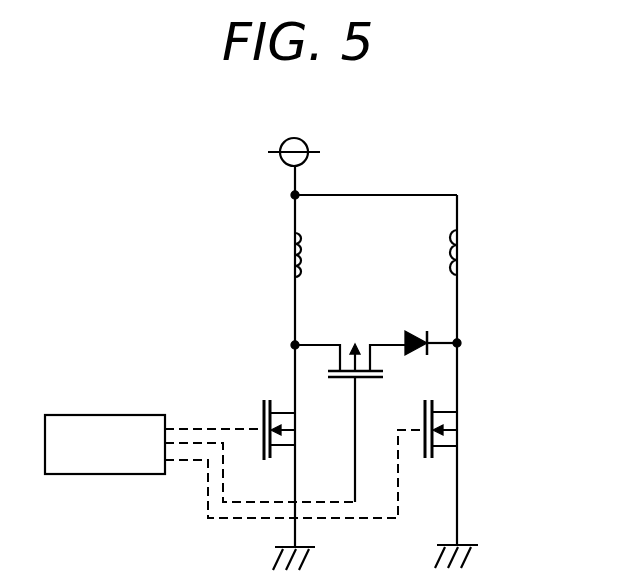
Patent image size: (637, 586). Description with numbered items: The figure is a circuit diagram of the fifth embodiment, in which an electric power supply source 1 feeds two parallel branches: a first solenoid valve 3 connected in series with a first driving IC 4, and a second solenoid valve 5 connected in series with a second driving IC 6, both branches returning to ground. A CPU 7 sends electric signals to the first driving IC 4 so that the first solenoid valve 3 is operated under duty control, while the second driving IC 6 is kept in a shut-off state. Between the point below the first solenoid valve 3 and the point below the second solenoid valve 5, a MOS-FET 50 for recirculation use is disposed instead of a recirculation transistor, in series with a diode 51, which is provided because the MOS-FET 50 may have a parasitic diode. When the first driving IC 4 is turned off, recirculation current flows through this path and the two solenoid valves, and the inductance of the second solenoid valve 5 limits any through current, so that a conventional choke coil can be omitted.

The electric power supply source 1 is at (306, 148).
The first solenoid valve 3 is at (293, 242).
The second solenoid valve 5 is at (462, 246).
The MOS-FET 50 is at (346, 343).
The diode 51 is at (421, 331).
The first driving IC 4 is at (262, 406).
The second driving IC 6 is at (448, 429).
The CPU 7 is at (100, 474).